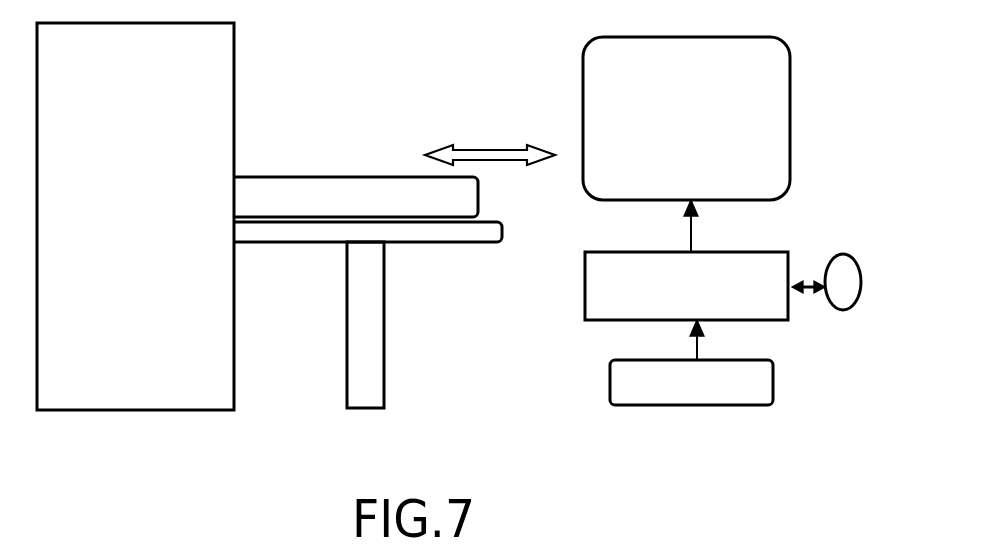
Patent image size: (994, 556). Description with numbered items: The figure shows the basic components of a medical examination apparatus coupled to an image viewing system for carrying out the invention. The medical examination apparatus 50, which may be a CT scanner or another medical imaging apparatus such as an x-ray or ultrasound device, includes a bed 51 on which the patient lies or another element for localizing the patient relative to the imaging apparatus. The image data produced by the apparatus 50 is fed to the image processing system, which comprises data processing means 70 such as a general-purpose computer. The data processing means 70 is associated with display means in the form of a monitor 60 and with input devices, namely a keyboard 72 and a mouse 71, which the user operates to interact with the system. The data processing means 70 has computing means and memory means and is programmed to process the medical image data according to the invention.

The medical examination apparatus 50 is at (235, 43).
The bed 51 is at (331, 176).
The monitor 60 is at (583, 85).
The data processing means 70 is at (585, 290).
The mouse 71 is at (850, 253).
The keyboard 72 is at (610, 382).